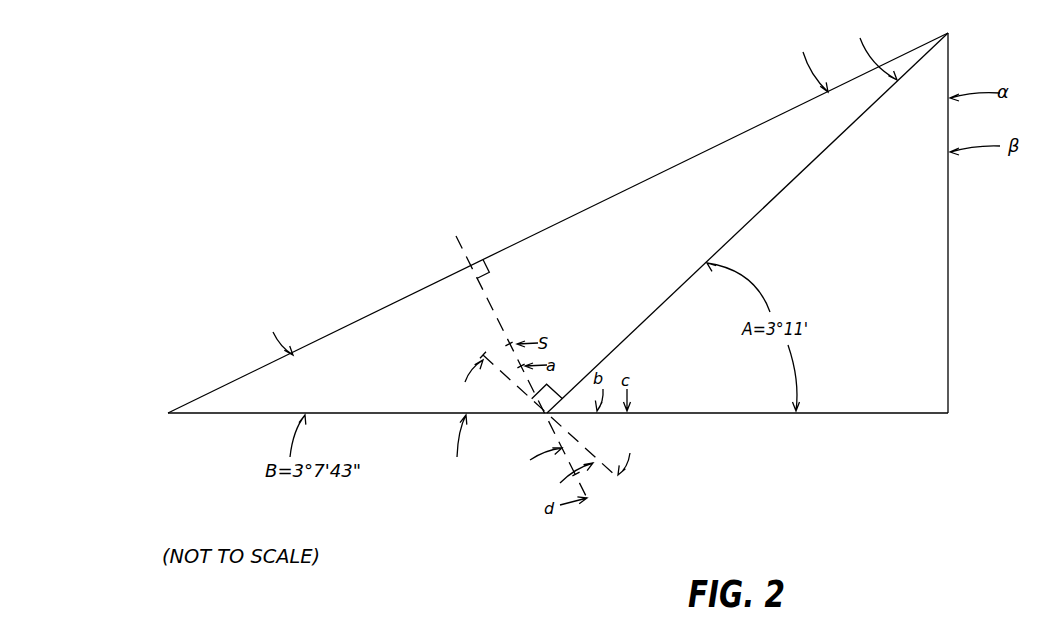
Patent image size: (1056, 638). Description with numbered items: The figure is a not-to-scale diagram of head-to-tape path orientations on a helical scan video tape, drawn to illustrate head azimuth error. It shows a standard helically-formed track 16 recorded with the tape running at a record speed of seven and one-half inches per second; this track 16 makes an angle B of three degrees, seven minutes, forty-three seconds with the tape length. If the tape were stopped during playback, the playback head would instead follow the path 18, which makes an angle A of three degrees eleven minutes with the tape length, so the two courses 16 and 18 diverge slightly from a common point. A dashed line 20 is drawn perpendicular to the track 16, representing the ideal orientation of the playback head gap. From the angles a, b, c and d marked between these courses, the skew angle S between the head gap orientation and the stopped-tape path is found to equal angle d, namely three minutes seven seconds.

The helically-formed track 16 is at (357, 322).
The path 18 is at (797, 176).
The line 20 is at (492, 299).